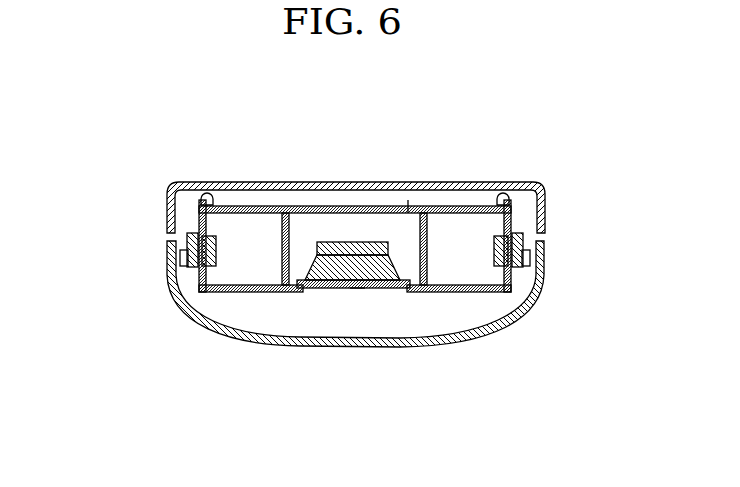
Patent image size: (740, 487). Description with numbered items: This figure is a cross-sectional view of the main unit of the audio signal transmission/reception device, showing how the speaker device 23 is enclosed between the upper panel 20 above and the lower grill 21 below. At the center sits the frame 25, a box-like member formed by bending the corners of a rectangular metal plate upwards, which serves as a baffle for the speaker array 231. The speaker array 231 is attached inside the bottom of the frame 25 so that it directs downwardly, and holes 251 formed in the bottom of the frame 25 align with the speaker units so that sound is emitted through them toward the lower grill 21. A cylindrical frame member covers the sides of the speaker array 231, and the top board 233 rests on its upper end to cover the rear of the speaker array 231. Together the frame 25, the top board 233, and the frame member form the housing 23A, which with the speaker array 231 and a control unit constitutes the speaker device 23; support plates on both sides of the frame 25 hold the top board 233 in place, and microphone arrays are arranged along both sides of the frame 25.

The upper panel 20 is at (534, 183).
The lower grill 21 is at (510, 324).
The speaker device 23 is at (383, 196).
The housing 23A is at (335, 202).
The speaker array 231 is at (333, 242).
The top board 233 is at (408, 200).
The frame 25 is at (263, 292).
The holes 251 is at (357, 290).